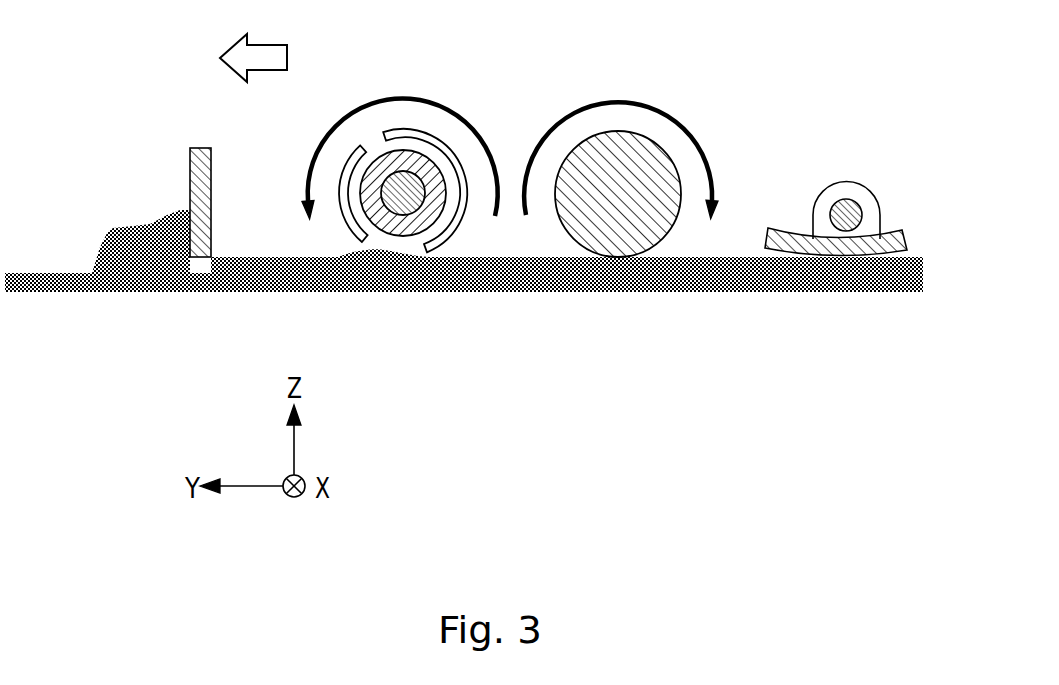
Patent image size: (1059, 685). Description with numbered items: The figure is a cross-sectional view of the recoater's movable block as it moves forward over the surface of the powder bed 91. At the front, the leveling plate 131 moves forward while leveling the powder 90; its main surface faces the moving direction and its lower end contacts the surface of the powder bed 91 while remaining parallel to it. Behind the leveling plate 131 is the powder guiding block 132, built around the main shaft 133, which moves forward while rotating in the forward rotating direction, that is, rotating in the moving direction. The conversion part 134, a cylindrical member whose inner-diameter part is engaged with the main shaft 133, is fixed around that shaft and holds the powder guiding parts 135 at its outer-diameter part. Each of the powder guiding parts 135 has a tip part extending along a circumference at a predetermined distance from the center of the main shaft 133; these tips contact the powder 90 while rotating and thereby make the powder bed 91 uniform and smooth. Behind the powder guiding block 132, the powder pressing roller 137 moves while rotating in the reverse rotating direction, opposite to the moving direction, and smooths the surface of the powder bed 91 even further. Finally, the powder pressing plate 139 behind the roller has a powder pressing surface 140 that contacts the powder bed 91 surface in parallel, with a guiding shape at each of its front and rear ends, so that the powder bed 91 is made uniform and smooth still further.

The powder 90 is at (115, 228).
The powder bed 91 is at (52, 273).
The leveling plate 131 is at (188, 148).
The powder guiding block 132 is at (397, 92).
The main shaft 133 is at (400, 187).
The conversion part 134 is at (427, 215).
The powder guiding parts 135 is at (358, 232).
The powder pressing roller 137 is at (607, 132).
The powder pressing plate 139 is at (792, 232).
The powder pressing surface 140 is at (842, 258).